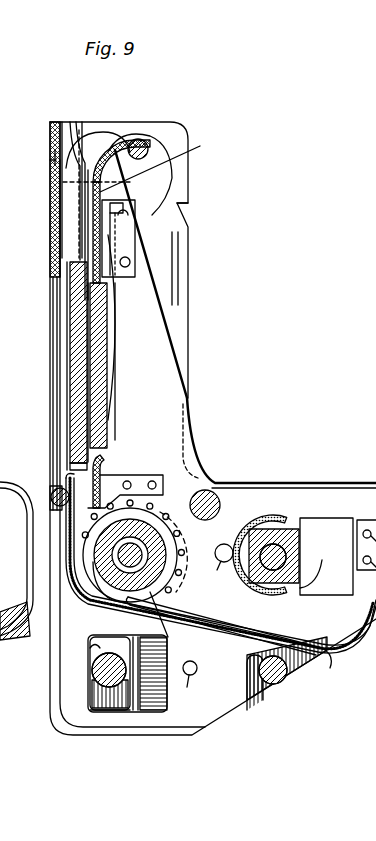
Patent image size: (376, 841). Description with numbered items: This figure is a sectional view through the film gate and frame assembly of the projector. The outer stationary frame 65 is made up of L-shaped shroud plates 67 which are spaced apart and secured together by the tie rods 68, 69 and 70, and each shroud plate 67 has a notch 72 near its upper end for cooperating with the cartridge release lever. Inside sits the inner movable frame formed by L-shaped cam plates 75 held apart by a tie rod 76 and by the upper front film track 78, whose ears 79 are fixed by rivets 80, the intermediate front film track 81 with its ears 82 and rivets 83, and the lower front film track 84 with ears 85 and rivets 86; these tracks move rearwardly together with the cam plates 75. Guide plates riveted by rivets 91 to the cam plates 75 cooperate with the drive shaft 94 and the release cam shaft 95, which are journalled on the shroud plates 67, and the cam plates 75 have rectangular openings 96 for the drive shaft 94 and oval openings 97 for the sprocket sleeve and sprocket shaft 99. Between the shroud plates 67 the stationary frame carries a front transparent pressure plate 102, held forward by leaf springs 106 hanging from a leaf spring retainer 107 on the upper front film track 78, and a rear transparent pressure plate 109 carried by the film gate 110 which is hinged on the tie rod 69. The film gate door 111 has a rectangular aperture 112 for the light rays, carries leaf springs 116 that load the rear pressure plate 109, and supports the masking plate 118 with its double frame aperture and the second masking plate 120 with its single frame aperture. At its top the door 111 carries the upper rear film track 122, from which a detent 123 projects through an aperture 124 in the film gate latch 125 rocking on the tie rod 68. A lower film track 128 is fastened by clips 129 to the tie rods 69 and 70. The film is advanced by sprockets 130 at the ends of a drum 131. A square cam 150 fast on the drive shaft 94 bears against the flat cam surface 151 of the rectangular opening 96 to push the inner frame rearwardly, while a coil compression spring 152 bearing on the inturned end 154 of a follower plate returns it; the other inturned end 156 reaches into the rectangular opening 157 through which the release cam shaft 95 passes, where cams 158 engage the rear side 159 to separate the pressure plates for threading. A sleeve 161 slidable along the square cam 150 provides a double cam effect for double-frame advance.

The outer stationary frame 65 is at (207, 187).
The shroud plate 67 is at (187, 288).
The tie rod 68 is at (141, 145).
The tie rod 69 is at (53, 490).
The tie rod 70 is at (290, 672).
The notch 72 is at (187, 208).
The cam plate 75 is at (158, 338).
The tie rod 76 is at (208, 483).
The upper front film track 78 is at (161, 174).
The ear 79 is at (135, 249).
The rivet 80 is at (130, 212).
The intermediate front film track 81 is at (105, 468).
The ear 82 is at (162, 476).
The rivet 83 is at (151, 482).
The lower front film track 84 is at (347, 637).
The ear 85 is at (365, 530).
The rivet 86 is at (366, 572).
The rivet 91 is at (206, 626).
The drive shaft 94 is at (273, 545).
The release cam shaft 95 is at (100, 676).
The rectangular opening 96 is at (331, 520).
The oval opening 97 is at (172, 535).
The sprocket shaft 99 is at (186, 602).
The front transparent pressure plate 102 is at (100, 388).
The leaf spring 106 is at (117, 303).
The leaf spring retainer 107 is at (136, 229).
The rear transparent pressure plate 109 is at (80, 362).
The film gate 110 is at (34, 243).
The door 111 is at (56, 218).
The rectangular aperture 112 is at (53, 342).
The leaf spring 116 is at (60, 309).
The masking plate 118 is at (72, 283).
The second masking plate 120 is at (72, 402).
The upper rear film track 122 is at (85, 163).
The detent 123 is at (52, 158).
The aperture 124 is at (52, 146).
The film gate latch 125 is at (86, 128).
The lower film track 128 is at (215, 643).
The clip 129 is at (66, 548).
The sprocket 130 is at (165, 518).
The drum 131 is at (180, 627).
The cam 150 is at (254, 518).
The flat cam surface 151 is at (244, 578).
The coil compression spring 152 is at (298, 586).
The inturned end 154 is at (304, 520).
The inturned end 156 is at (137, 690).
The rectangular opening 157 is at (124, 708).
The cam 158 is at (98, 708).
The rear side 159 is at (95, 650).
The sleeve 161 is at (280, 518).